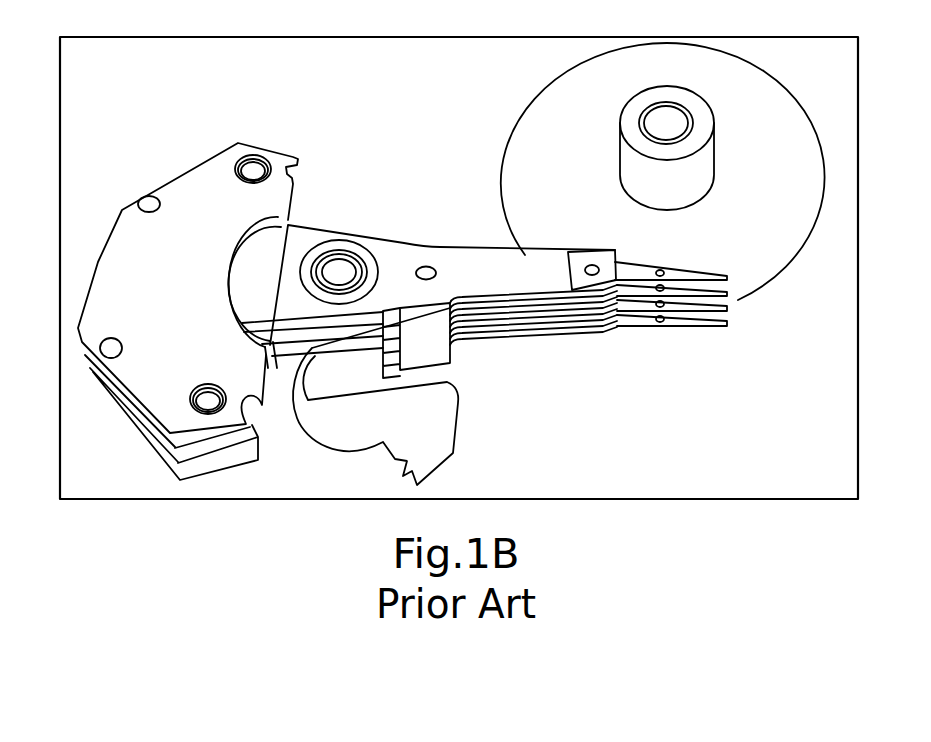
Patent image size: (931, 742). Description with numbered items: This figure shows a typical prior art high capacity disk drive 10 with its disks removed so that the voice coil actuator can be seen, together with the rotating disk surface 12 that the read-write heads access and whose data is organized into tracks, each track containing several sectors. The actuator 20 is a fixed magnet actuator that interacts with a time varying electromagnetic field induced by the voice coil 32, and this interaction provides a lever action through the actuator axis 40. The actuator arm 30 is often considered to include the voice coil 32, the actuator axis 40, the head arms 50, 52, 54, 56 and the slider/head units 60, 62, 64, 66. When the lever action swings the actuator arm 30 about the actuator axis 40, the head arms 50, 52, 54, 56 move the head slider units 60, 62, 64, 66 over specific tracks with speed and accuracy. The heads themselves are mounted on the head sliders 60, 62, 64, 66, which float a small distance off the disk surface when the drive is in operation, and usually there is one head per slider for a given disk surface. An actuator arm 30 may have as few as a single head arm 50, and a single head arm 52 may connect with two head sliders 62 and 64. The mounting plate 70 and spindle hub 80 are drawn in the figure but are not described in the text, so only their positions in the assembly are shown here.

The high capacity disk drive 10 is at (343, 93).
The rotating disk surface 12 is at (750, 83).
The actuator 20 is at (197, 187).
The actuator arm 30 is at (527, 252).
The voice coil 32 is at (256, 284).
The actuator axis 40 is at (340, 268).
The head arm 50 is at (513, 260).
The head arm 52 is at (565, 317).
The head arm 54 is at (543, 330).
The head arm 56 is at (522, 343).
The slider/head unit 60 is at (700, 272).
The slider/head unit 62 is at (733, 297).
The slider/head unit 64 is at (690, 318).
The slider/head unit 66 is at (672, 341).
The mounting plate 70 is at (605, 262).
The spindle hub 80 is at (700, 163).